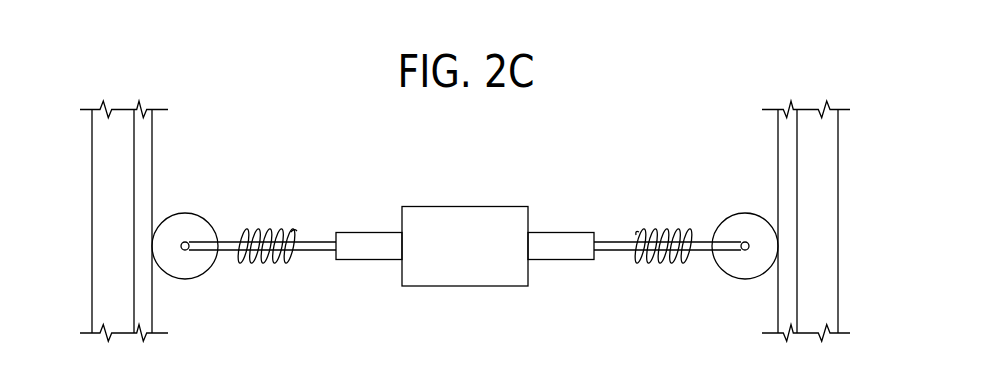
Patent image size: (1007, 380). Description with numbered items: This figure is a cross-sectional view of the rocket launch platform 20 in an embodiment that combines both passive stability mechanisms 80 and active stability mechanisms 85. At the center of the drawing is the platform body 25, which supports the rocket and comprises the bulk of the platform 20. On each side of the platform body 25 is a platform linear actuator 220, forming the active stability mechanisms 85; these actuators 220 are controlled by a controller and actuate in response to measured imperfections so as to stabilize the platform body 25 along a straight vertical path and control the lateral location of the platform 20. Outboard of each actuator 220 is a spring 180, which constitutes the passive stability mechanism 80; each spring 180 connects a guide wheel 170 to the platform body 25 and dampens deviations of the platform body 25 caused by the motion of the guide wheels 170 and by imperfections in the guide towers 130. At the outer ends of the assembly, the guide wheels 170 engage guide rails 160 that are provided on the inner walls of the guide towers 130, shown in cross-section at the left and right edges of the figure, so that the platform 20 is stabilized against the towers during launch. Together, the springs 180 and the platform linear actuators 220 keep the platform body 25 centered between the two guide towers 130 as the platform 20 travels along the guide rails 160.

The platform 20 is at (404, 162).
The platform body 25 is at (477, 207).
The passive stability mechanisms 80 is at (263, 266).
The active stability mechanisms 85 is at (357, 260).
The guide towers 130 is at (120, 153).
The guide rails 160 is at (152, 190).
The guide wheels 170 is at (205, 278).
The springs 180 is at (266, 250).
The platform linear actuators 220 is at (367, 248).